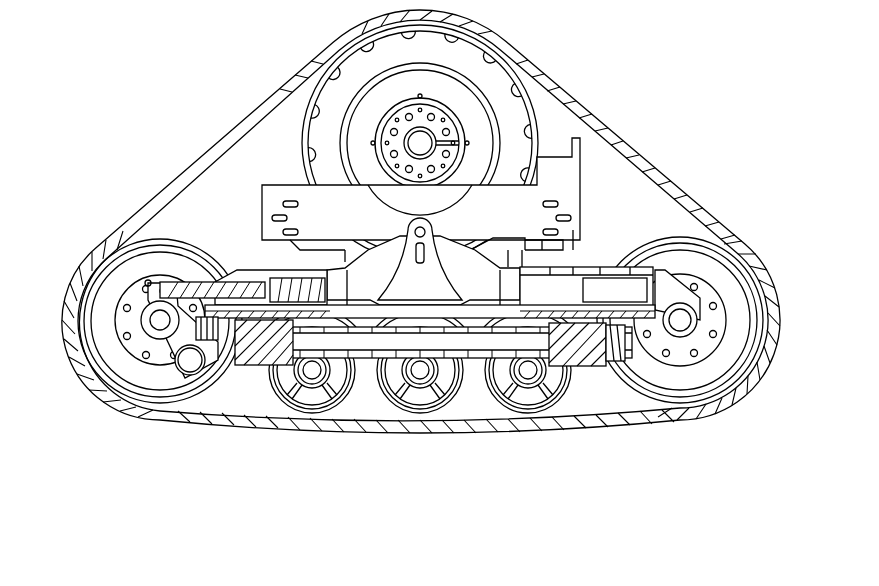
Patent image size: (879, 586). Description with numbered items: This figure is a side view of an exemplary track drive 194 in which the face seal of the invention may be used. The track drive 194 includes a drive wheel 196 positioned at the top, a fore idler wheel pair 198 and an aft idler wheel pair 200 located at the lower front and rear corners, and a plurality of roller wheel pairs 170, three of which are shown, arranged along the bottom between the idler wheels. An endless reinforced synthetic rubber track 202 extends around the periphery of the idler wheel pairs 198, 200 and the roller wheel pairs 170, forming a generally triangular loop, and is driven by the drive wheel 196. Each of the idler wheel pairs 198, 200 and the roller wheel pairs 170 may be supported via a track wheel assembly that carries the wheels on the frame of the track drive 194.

The track drive 194 is at (152, 160).
The drive wheel 196 is at (522, 97).
The fore idler wheel pair 198 is at (130, 371).
The aft idler wheel pair 200 is at (710, 372).
The endless reinforced synthetic rubber track 202 is at (608, 124).
The roller wheel pairs 170 is at (265, 405).